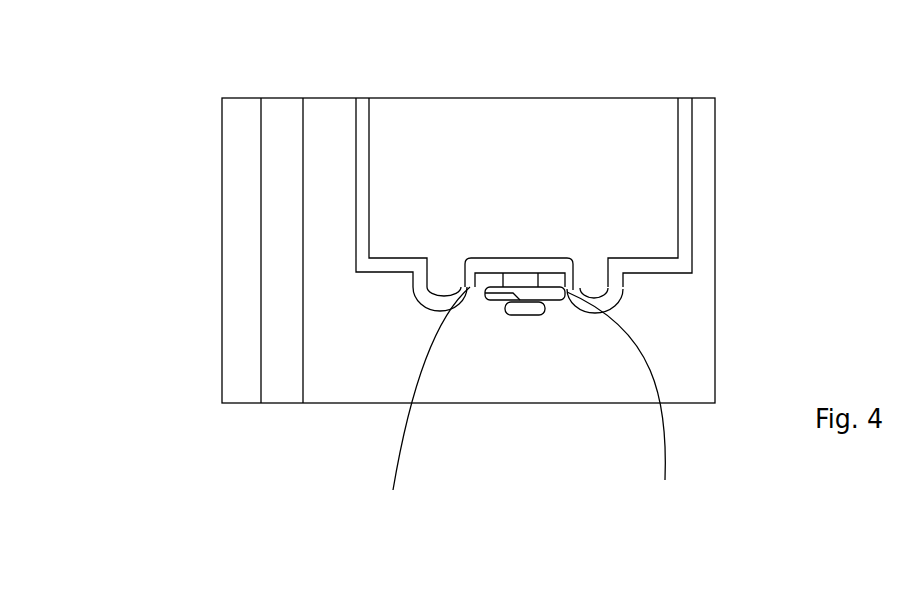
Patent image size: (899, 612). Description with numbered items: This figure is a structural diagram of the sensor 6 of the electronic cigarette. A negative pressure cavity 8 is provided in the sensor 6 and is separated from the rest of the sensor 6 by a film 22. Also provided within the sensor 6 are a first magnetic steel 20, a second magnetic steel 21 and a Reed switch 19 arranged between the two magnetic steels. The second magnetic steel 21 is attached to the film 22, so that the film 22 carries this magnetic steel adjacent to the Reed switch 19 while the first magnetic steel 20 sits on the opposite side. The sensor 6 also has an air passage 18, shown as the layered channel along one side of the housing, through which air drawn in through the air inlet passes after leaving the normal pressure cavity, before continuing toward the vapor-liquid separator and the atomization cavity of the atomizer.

The sensor 6 is at (685, 368).
The negative pressure cavity 8 is at (627, 230).
The air passage 18 is at (280, 150).
The Reed switch 19 is at (565, 295).
The first magnetic steel 20 is at (567, 296).
The second magnetic steel 21 is at (500, 282).
The film 22 is at (687, 125).